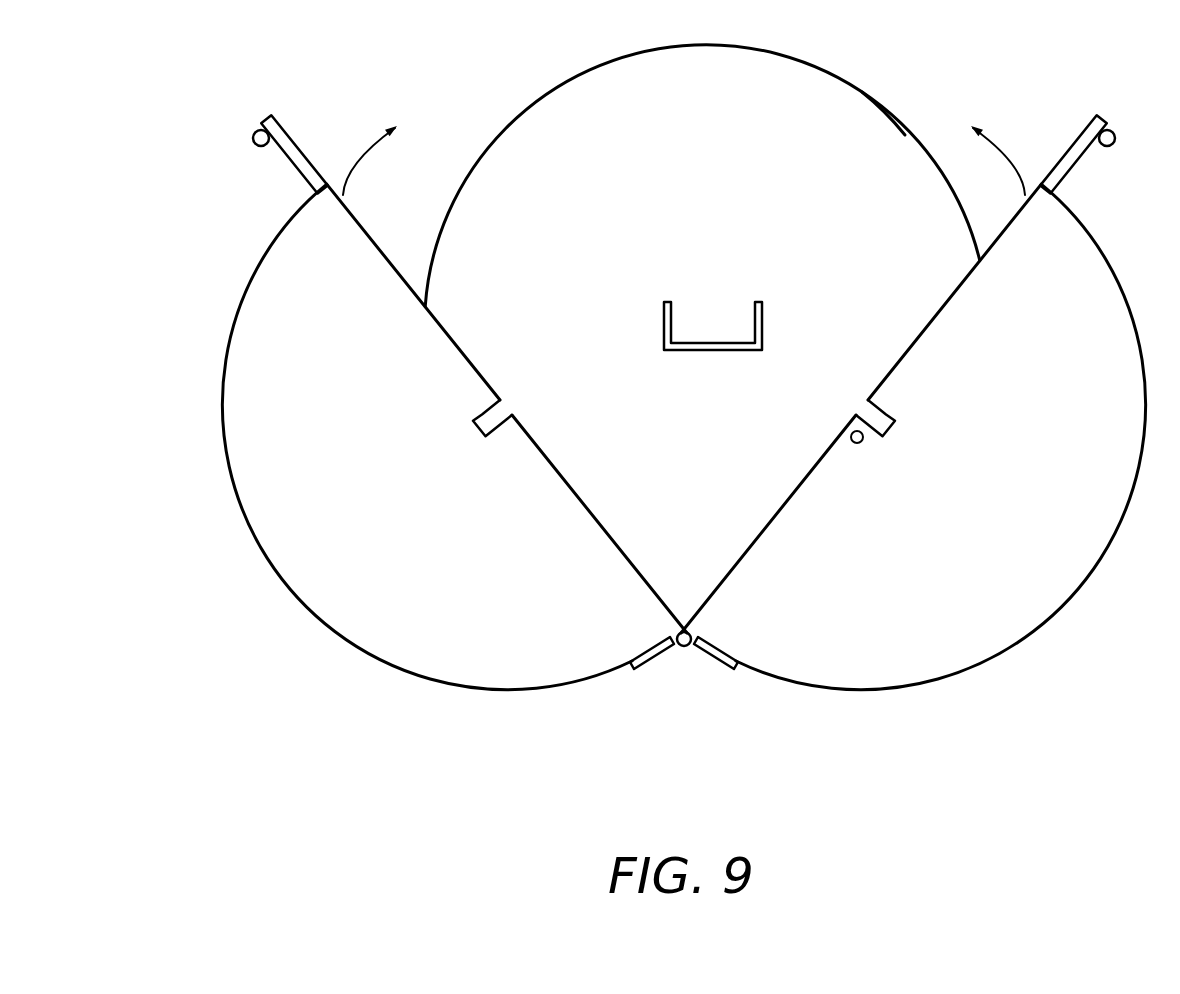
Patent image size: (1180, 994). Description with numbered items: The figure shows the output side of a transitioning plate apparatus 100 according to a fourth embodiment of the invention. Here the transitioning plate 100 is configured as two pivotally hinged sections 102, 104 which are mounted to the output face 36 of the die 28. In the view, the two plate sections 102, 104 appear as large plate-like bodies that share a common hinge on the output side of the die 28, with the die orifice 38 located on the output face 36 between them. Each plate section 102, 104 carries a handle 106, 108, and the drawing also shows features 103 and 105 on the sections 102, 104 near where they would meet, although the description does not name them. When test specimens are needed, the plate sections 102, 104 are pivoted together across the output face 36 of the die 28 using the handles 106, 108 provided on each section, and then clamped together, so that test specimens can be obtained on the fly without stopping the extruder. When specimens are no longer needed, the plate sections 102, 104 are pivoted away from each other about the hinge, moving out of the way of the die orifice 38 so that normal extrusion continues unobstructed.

The die 28 is at (842, 73).
The output face 36 is at (877, 130).
The die orifice 38 is at (762, 317).
The transitioning plate apparatus 100 is at (337, 667).
The plate section 102 is at (420, 675).
The plate section 104 is at (935, 680).
The left latch 103 is at (476, 425).
The right latch 105 is at (883, 409).
The handle 106 is at (287, 155).
The handle 108 is at (1081, 155).